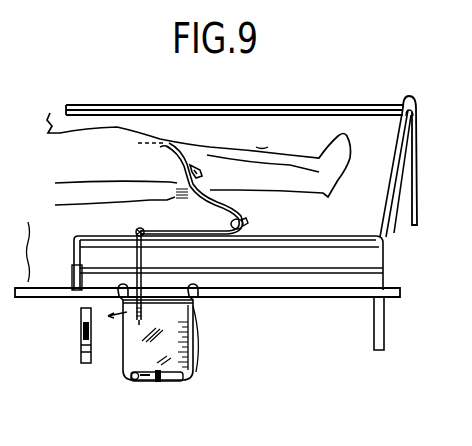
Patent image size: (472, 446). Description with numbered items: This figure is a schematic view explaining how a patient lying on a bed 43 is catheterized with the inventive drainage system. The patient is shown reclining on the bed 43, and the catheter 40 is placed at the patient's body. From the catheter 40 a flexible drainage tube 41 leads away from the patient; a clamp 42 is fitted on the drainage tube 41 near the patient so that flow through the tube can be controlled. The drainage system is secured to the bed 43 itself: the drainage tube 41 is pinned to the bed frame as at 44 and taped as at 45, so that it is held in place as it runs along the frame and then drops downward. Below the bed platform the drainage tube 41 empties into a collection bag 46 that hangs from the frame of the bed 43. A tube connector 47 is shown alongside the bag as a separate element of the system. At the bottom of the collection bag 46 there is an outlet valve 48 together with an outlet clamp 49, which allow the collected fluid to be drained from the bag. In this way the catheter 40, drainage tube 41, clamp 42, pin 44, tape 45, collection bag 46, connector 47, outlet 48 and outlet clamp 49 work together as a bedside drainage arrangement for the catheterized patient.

The catheter 40 is at (165, 143).
The drainage tube 41 is at (212, 202).
The clamp 42 is at (190, 170).
The bed 43 is at (303, 127).
The pin 44 is at (247, 224).
The tape 45 is at (134, 229).
The collection bag 46 is at (193, 334).
The tube connector 47 is at (83, 352).
The outlet valve 48 is at (139, 382).
The outlet clamp 49 is at (160, 383).